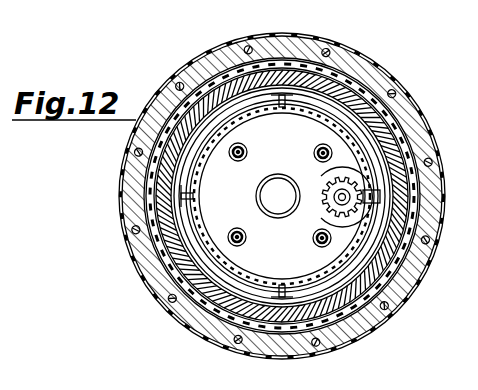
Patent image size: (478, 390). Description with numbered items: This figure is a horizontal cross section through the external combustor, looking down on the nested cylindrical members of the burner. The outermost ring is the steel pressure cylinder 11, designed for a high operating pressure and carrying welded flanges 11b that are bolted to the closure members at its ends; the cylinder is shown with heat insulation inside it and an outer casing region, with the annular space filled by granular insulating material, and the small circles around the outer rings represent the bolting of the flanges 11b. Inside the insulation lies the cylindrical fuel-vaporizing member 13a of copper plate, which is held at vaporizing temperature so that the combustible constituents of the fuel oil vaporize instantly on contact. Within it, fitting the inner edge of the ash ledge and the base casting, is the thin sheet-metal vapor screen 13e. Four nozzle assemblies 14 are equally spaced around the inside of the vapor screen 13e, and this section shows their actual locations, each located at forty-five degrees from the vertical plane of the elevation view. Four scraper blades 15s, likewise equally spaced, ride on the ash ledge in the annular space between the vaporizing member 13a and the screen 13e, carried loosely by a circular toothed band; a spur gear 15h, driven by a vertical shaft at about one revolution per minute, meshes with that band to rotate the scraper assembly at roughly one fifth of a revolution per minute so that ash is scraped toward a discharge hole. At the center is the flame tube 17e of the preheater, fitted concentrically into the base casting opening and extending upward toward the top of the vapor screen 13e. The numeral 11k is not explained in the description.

The pressure cylinder 11 is at (361, 88).
The flanges 11b is at (284, 52).
The inner housing ring 11k is at (332, 52).
The fuel-vaporizing member 13a is at (182, 154).
The vapor screen 13e is at (248, 132).
The nozzle assemblies 14 is at (316, 242).
The scraper blades 15s is at (193, 200).
The spur gear 15h is at (318, 207).
The flame tube 17e is at (281, 175).